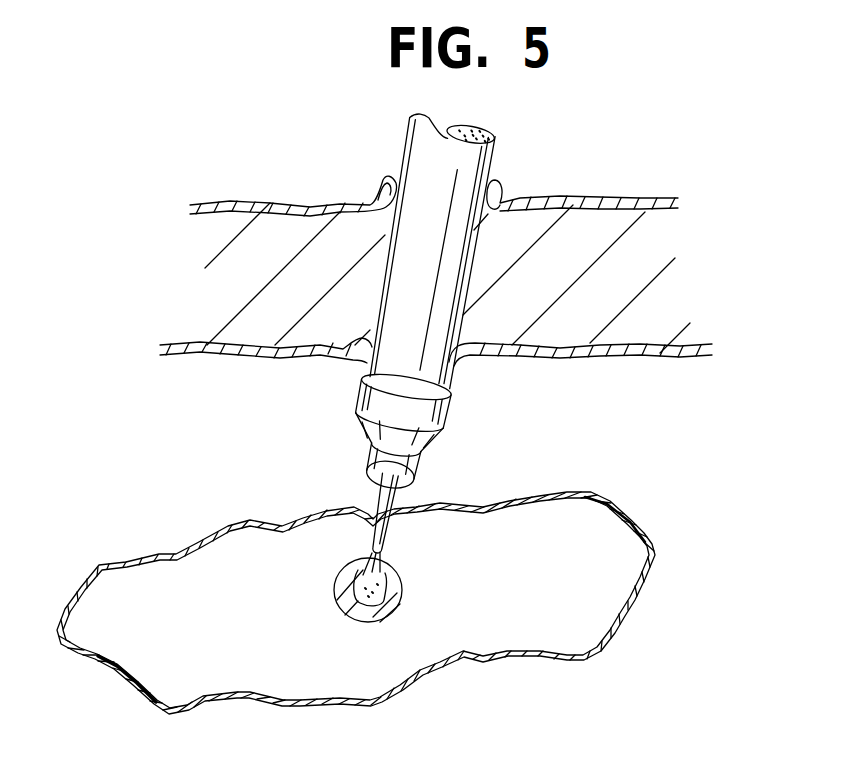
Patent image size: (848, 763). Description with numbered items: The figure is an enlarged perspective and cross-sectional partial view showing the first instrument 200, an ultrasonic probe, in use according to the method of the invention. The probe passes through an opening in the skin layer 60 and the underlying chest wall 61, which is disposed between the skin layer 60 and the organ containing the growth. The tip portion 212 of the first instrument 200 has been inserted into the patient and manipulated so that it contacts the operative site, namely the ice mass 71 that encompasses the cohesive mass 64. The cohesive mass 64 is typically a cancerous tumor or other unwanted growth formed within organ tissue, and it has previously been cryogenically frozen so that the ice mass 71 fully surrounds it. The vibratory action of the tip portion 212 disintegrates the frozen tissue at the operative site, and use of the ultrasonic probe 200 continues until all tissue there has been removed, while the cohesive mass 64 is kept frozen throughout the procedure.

The first instrument 200 is at (444, 330).
The tip portion 212 is at (381, 497).
The skin layer 60 is at (268, 203).
The chest wall 61 is at (697, 348).
The ice mass 71 is at (398, 584).
The cohesive mass 64 is at (355, 607).